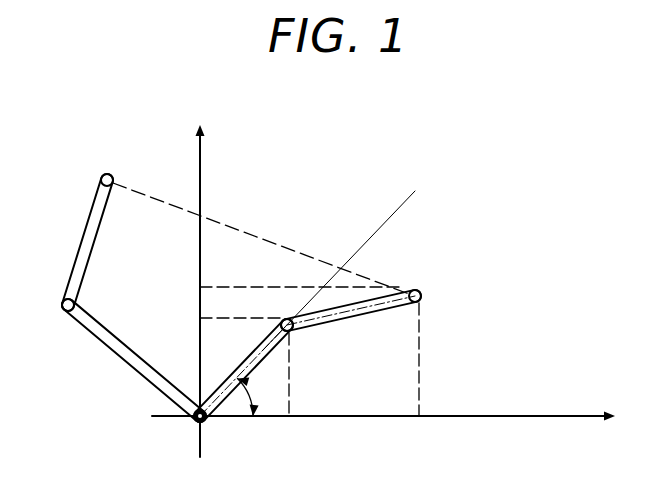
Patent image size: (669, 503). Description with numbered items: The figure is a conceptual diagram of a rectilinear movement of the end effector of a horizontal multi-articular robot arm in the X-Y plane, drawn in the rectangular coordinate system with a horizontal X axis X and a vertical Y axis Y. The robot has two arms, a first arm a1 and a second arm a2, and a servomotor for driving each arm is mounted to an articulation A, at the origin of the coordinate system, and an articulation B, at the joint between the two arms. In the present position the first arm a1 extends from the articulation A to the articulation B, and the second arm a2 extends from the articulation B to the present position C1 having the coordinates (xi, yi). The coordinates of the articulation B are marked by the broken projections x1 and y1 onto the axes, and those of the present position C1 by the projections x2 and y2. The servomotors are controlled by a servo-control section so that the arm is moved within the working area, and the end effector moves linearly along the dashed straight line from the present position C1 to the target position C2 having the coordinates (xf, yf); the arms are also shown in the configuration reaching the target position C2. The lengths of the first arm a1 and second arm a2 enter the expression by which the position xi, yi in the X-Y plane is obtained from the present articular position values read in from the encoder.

The articulation A is at (190, 428).
The articulation B is at (301, 345).
The present position C1 is at (421, 293).
The target position C2 is at (85, 156).
The first arm a1 is at (134, 361).
The second arm a2 is at (75, 243).
The x coordinate of joint B x1 is at (297, 397).
The x coordinate of C1 x2 is at (419, 382).
The y coordinate of joint B y1 is at (226, 321).
The y coordinate of C1 y2 is at (285, 288).
The X axis X is at (394, 420).
The Y axis Y is at (198, 274).